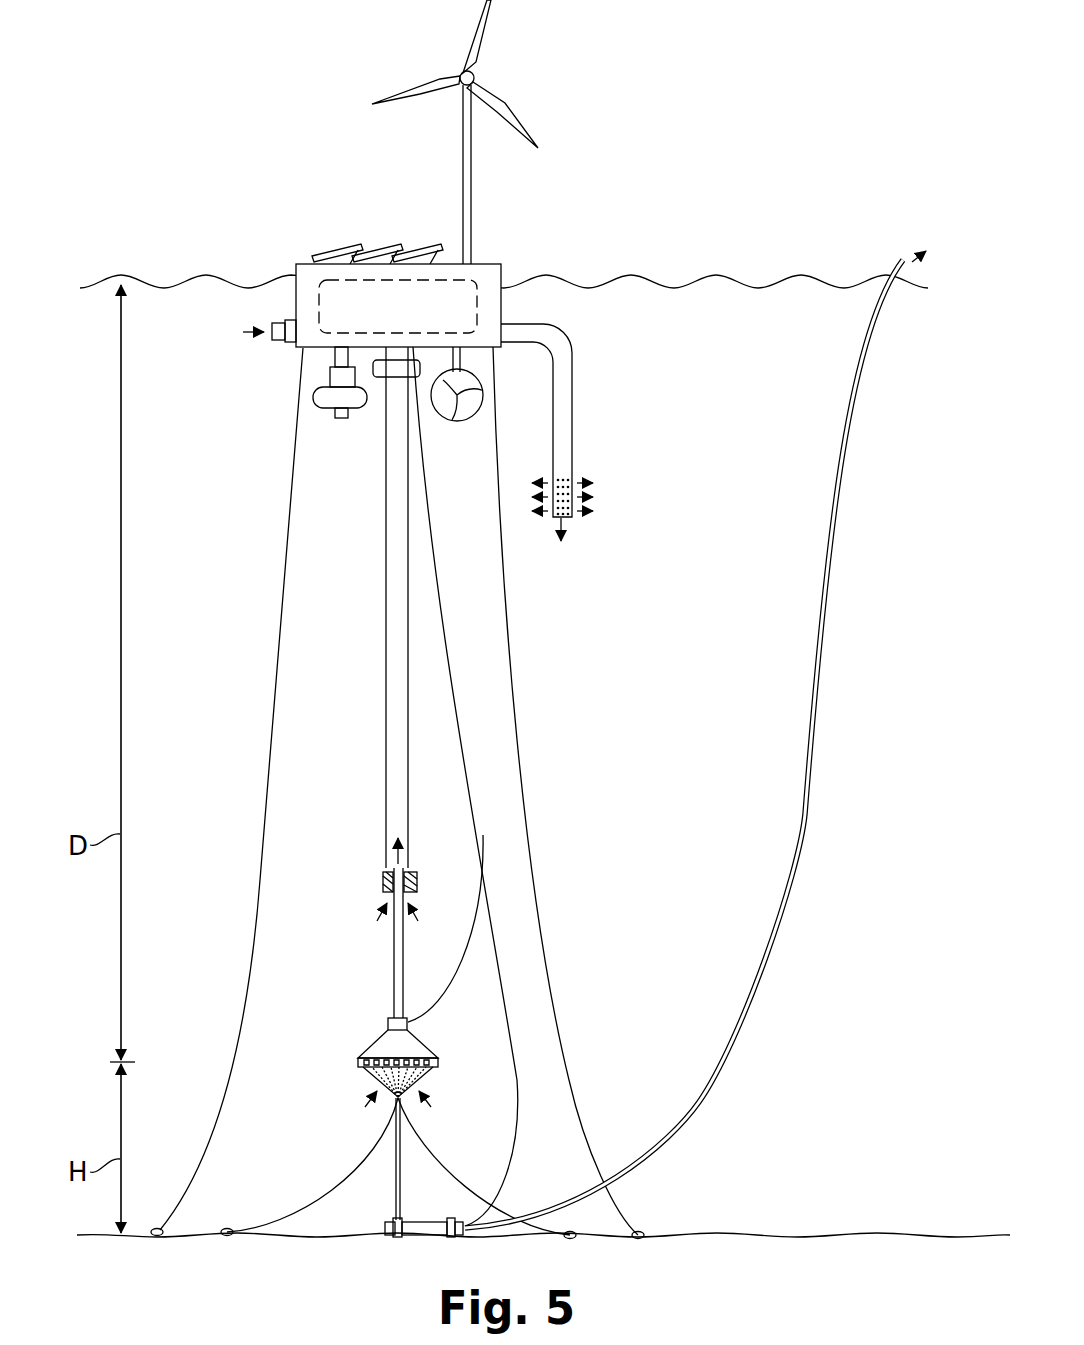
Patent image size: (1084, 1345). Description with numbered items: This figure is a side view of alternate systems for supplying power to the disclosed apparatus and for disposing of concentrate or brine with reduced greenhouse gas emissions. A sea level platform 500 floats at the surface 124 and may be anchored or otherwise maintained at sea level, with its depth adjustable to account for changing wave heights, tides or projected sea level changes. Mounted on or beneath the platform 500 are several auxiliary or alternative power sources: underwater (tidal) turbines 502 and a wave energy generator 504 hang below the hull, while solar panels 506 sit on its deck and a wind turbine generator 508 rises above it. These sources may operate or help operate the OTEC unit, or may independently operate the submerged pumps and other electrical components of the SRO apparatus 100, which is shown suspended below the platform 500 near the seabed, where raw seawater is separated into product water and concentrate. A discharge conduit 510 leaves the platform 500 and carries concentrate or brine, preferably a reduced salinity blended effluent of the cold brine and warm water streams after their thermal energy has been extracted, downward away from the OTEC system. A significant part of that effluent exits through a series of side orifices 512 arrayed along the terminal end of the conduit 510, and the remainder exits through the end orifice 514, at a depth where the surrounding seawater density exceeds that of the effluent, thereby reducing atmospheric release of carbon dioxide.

The SRO apparatus 100 is at (370, 1031).
The surface 124 is at (714, 274).
The sea level platform 500 is at (514, 244).
The underwater turbines 502 is at (457, 421).
The wave energy generator 504 is at (340, 418).
The solar panels 506 is at (348, 245).
The wind turbine generator 508 is at (505, 108).
The discharge conduit 510 is at (565, 410).
The side orifices 512 is at (563, 478).
The end orifice 514 is at (570, 519).